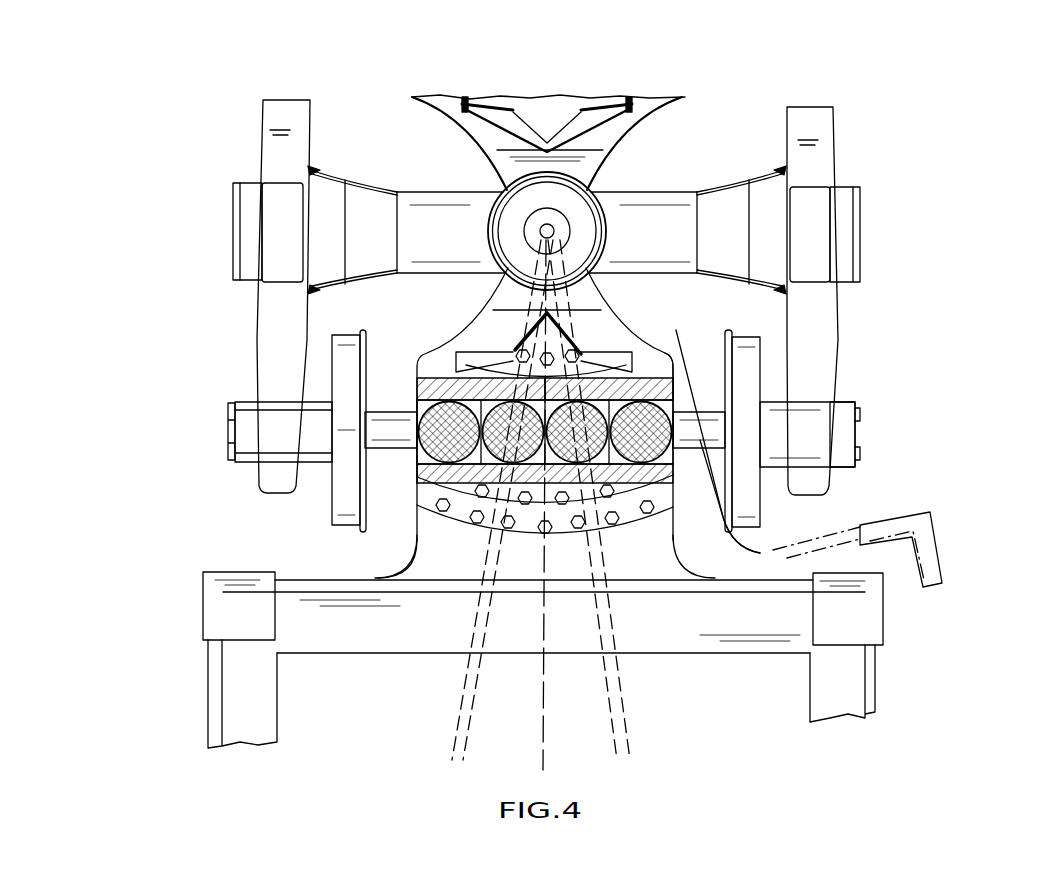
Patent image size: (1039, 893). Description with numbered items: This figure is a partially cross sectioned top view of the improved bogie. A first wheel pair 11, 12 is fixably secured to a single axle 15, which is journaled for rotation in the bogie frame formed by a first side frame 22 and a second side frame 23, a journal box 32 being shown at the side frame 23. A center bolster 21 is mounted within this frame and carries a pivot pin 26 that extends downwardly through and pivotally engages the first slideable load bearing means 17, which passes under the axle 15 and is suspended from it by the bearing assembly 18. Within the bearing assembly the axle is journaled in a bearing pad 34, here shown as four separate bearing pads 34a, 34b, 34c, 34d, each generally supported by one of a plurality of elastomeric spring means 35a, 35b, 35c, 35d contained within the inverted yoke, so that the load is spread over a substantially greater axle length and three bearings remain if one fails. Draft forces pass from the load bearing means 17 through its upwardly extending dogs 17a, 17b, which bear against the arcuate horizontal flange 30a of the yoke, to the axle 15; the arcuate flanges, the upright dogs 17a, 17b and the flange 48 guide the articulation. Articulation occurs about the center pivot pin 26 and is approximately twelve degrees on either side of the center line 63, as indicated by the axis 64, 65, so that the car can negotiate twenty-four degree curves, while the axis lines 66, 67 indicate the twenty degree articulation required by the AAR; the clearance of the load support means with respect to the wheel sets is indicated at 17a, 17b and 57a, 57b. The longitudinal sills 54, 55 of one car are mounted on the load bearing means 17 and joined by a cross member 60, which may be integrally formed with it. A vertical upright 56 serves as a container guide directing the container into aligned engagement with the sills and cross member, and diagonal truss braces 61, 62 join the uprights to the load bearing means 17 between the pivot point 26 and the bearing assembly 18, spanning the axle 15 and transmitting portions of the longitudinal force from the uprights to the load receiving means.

The wheel 11 is at (333, 505).
The wheel 12 is at (762, 371).
The axle 15 is at (386, 410).
The first slideable load bearing means 17 is at (491, 575).
The upwardly extending dog 17a is at (718, 521).
The upwardly extending dog 17b is at (719, 524).
The bearing assembly 18 is at (413, 458).
The center bolster 21 is at (411, 193).
The first side frame 22 is at (262, 337).
The second side frame 23 is at (826, 332).
The pivot pin 26 is at (551, 229).
The horizontal flange 30a is at (414, 540).
The journal box 32 is at (848, 433).
The bearing pad 34 is at (541, 485).
The bearing pad 34a is at (432, 379).
The bearing pad 34b is at (493, 378).
The bearing pad 34c is at (606, 403).
The bearing pad 34d is at (677, 410).
The elastomeric spring means 35a is at (455, 466).
The elastomeric spring means 35b is at (511, 466).
The elastomeric spring means 35c is at (584, 466).
The elastomeric spring means 35d is at (641, 466).
The flange 48 is at (620, 514).
The longitudinal sill 54 is at (208, 672).
The longitudinal sill 55 is at (860, 676).
The vertical upright 56 is at (228, 572).
The articulation clearance indication 57a is at (884, 587).
The articulation clearance indication 57b is at (945, 562).
The cross member 60 is at (396, 655).
The diagonal truss brace 61 is at (583, 352).
The diagonal truss brace 62 is at (516, 348).
The center line 63 is at (544, 740).
The axis 64 is at (630, 758).
The axis 65 is at (452, 757).
The axis line 66 is at (466, 757).
The axis line 67 is at (617, 763).